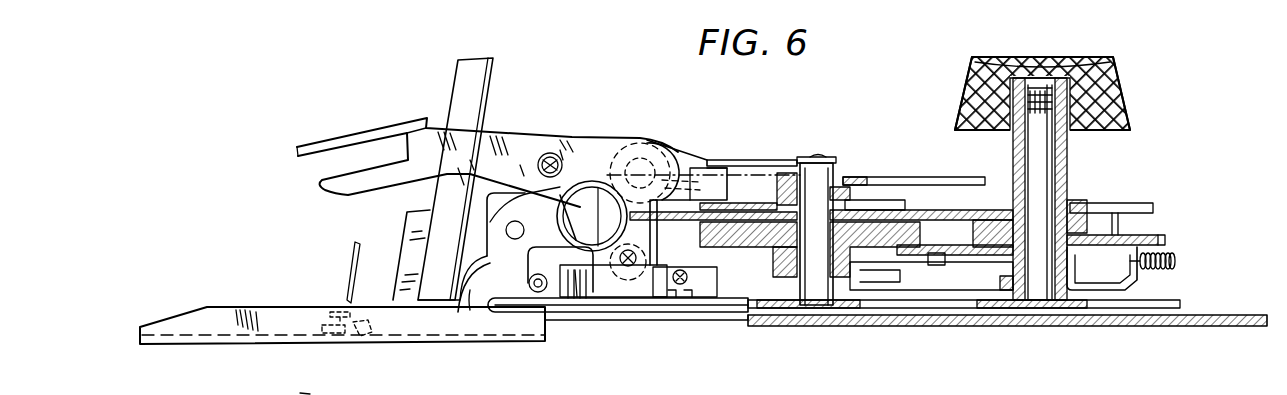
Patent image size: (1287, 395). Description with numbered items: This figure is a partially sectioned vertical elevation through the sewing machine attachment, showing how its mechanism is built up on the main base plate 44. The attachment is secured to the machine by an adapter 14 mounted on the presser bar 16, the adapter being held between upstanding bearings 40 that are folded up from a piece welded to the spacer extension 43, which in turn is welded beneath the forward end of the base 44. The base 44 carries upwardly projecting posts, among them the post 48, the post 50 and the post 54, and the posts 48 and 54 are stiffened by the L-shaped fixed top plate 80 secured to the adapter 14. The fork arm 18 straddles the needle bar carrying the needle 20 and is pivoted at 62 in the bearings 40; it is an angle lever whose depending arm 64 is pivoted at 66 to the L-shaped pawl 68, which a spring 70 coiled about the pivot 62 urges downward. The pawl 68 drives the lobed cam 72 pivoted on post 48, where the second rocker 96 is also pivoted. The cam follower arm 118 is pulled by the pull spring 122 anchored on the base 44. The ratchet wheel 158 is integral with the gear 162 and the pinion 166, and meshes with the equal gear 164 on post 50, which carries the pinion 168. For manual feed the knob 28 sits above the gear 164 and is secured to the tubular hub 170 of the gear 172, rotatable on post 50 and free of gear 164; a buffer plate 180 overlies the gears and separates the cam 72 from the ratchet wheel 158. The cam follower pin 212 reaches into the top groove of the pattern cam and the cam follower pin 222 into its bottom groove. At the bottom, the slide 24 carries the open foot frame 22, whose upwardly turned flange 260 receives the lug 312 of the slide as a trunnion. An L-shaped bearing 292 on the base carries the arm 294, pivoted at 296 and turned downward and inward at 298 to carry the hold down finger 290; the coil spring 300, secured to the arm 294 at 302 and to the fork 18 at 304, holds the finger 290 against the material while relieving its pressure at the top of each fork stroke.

The adapter 14 is at (410, 240).
The presser bar 16 is at (491, 88).
The fork arm 18 is at (378, 133).
The sewing machine needle 20 is at (346, 288).
The open frame 22 is at (190, 313).
The slide 24 is at (434, 337).
The knob 28 is at (1120, 78).
The upstanding bearings 40 is at (498, 258).
The spacer extension 43 is at (645, 320).
The main base plate 44 is at (1182, 305).
The post 48 is at (819, 308).
The post 50 is at (1046, 156).
The post 54 is at (300, 393).
The pivot 62 is at (642, 144).
The depending arm 64 is at (713, 232).
The pivot 66 is at (613, 283).
The pawl 68 is at (708, 173).
The spring 70 is at (685, 160).
The lobed cam 72 is at (906, 203).
The fixed top plate 80 is at (785, 153).
The second rocker 96 is at (862, 179).
The cam follower arm 118 is at (1128, 204).
The pull spring 122 is at (1173, 262).
The ratchet wheel 158 is at (941, 212).
The gear 162 is at (722, 243).
The gear 164 is at (1103, 268).
The pinion 166 is at (787, 272).
The pinion 168 is at (1003, 280).
The tubular shaft or hub 170 is at (1064, 180).
The gear 172 is at (1124, 225).
The buffer plate 180 is at (962, 217).
The cam follower pin 212 is at (940, 260).
The cam follower pin 222 is at (923, 275).
The upwardly turned flange 260 is at (270, 298).
The hold down finger 290 is at (370, 334).
The L-shaped bearing 292 is at (340, 340).
The arm 294 is at (575, 292).
The pivot 296 is at (653, 262).
The downward and inward turn 298 is at (478, 325).
The coil spring 300 is at (592, 216).
The spring attachment point 302 is at (528, 284).
The spring attachment point 304 is at (552, 152).
The lug 312 is at (330, 318).